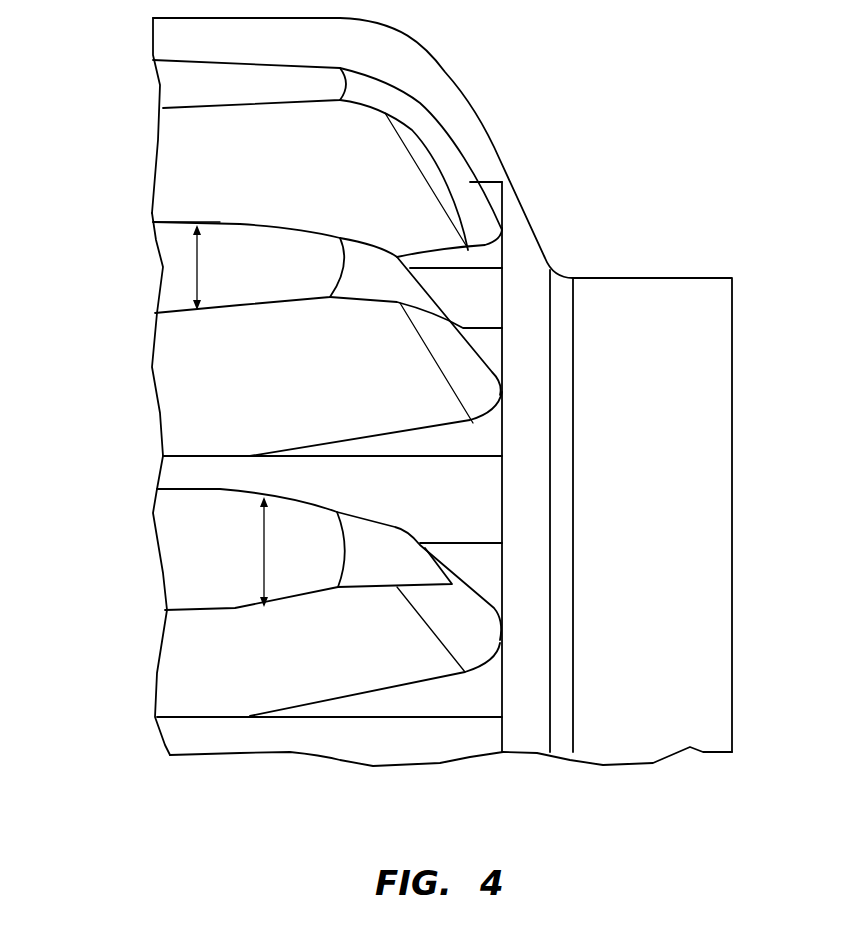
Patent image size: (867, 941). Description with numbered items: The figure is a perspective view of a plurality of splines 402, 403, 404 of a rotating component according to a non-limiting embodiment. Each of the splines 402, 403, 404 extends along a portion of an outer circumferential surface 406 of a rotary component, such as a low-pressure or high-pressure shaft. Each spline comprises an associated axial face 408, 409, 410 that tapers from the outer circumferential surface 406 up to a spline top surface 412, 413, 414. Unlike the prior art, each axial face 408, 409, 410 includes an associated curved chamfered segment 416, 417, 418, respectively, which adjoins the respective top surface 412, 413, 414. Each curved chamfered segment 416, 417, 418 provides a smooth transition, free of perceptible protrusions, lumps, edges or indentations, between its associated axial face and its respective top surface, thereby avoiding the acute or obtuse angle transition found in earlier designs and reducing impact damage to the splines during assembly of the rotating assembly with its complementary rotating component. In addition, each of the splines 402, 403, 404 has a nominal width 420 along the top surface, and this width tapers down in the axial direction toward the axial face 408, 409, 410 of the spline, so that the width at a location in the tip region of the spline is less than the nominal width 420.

The spline 402 is at (170, 87).
The spline 403 is at (214, 243).
The spline 404 is at (173, 528).
The outer circumferential surface 406 is at (472, 528).
The axial face 408 is at (470, 633).
The axial face 409 is at (470, 372).
The axial face 410 is at (467, 209).
The spline top surface 412 is at (220, 563).
The spline top surface 413 is at (284, 278).
The spline top surface 414 is at (240, 96).
The curved chamfered segment 416 is at (372, 562).
The curved chamfered segment 417 is at (407, 290).
The curved chamfered segment 418 is at (383, 92).
The nominal width 420 is at (173, 259).